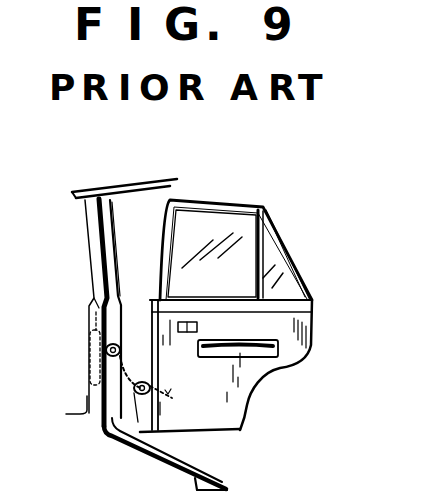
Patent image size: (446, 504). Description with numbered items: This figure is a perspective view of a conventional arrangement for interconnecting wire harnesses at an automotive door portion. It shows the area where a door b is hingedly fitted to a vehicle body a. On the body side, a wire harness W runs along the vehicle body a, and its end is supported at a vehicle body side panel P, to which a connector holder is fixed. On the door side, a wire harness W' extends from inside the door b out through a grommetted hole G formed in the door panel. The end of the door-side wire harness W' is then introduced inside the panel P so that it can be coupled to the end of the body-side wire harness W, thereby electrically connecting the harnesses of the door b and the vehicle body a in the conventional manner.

The vehicle body side panel P is at (112, 318).
The wire harness W is at (75, 348).
The vehicle body a is at (85, 398).
The grommetted hole G is at (152, 382).
The wire harness W' is at (187, 410).
The door b is at (293, 352).